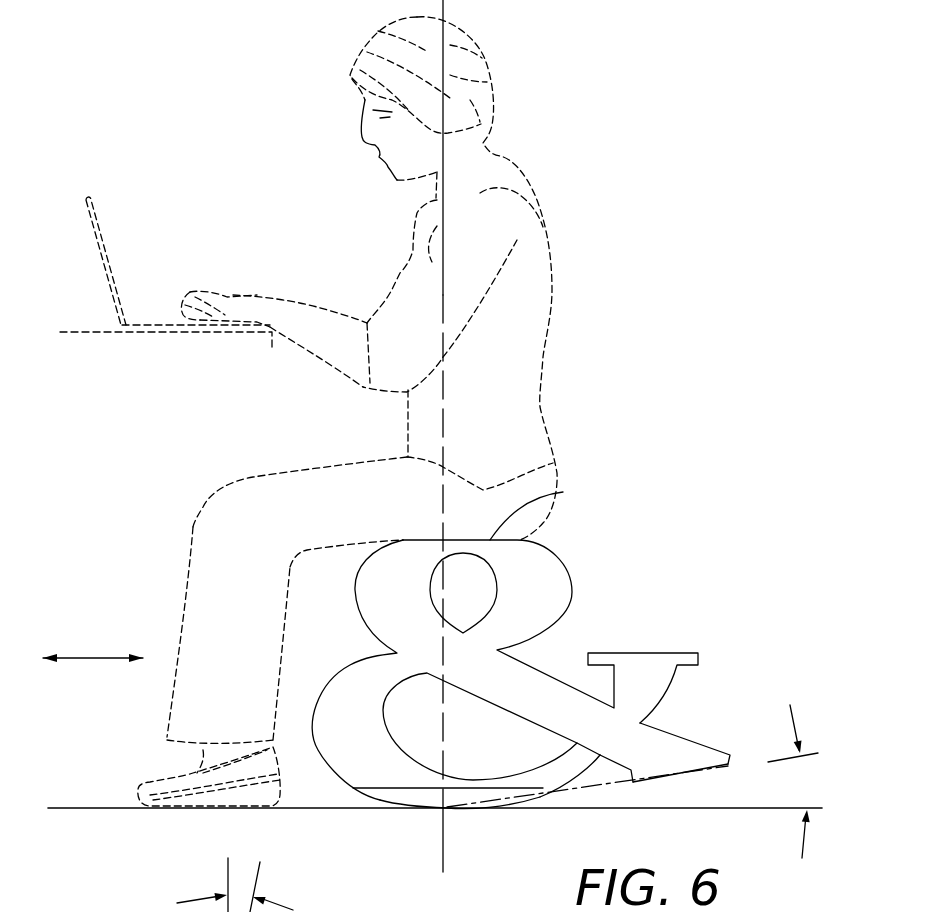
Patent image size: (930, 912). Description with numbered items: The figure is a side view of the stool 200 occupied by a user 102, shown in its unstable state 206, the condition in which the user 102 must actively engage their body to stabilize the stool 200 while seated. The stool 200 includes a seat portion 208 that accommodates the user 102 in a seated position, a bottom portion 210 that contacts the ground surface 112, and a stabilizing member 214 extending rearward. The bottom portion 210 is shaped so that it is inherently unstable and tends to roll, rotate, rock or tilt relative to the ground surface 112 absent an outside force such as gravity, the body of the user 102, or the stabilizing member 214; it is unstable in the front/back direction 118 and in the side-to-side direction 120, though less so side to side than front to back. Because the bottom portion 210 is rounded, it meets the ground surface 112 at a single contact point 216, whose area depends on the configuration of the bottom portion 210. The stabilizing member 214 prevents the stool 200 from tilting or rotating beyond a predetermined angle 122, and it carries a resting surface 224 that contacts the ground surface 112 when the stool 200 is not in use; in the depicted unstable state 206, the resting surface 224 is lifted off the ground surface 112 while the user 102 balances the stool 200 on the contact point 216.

The user 102 is at (552, 278).
The ground surface 112 is at (108, 807).
The front/back direction 118 is at (95, 655).
The side-to-side direction 120 is at (266, 885).
The predetermined angle 122 is at (805, 781).
The stool 200 is at (600, 565).
The unstable state 206 is at (616, 615).
The seat portion 208 is at (563, 492).
The bottom portion 210 is at (395, 794).
The stabilizing member 214 is at (710, 755).
The contact point 216 is at (447, 810).
The resting surface 224 is at (708, 770).